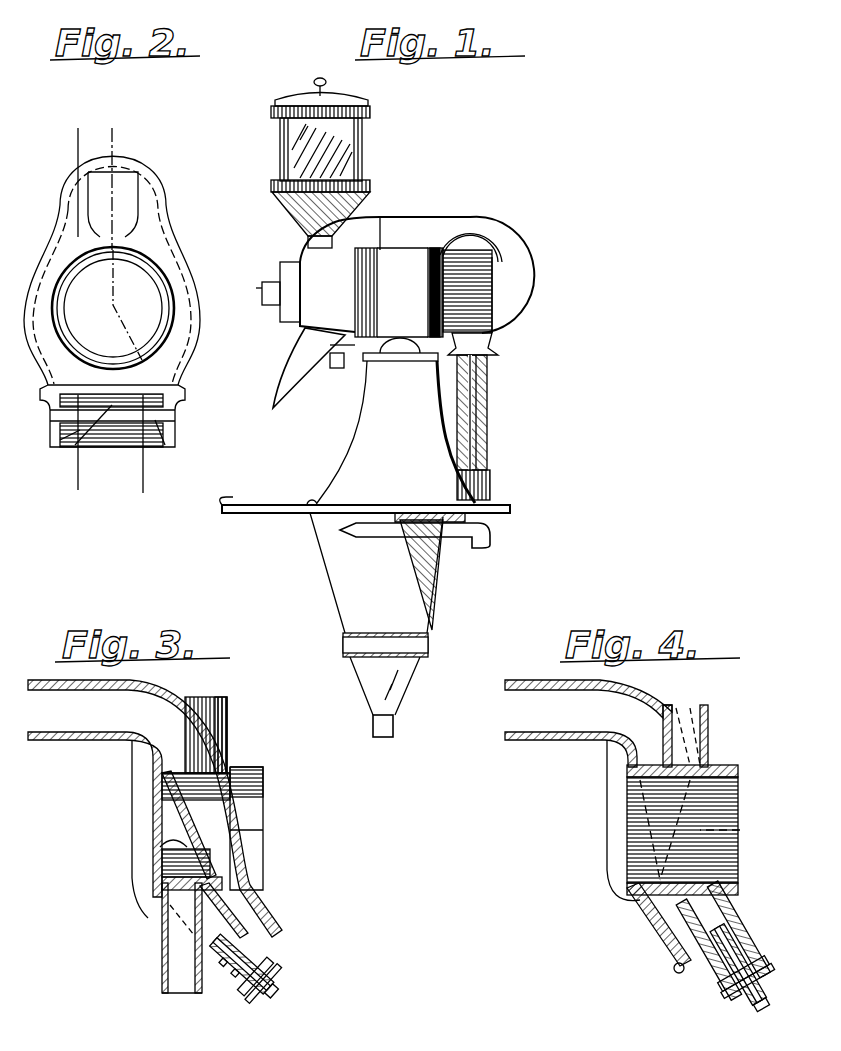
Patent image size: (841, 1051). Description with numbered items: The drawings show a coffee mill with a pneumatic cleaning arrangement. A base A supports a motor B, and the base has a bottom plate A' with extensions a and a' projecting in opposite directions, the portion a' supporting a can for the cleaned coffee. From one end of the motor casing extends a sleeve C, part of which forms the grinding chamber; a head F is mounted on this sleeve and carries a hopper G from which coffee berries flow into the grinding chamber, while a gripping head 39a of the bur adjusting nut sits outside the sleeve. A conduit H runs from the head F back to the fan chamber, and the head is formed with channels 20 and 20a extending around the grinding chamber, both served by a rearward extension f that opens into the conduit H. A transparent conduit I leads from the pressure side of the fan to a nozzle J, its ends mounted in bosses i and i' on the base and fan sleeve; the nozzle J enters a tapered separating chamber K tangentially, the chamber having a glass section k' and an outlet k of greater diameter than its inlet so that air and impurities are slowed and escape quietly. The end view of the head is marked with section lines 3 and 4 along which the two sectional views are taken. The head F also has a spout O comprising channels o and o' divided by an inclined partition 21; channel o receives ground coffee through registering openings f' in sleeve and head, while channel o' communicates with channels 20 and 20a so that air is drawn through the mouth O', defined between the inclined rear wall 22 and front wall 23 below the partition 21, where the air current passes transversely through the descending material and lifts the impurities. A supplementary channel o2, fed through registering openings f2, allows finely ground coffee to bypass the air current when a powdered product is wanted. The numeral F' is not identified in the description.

In FIG. 1, the hopper G is at (358, 152).
In FIG. 2, the head F is at (120, 270).
In FIG. 1, the head F is at (403, 275).
In FIG. 4, the head F is at (690, 741).
In FIG. 1, the rearward extension f is at (379, 223).
In FIG. 3, the rearward extension f is at (155, 808).
In FIG. 4, the rearward extension f is at (588, 790).
In FIG. 1, the conduit H is at (427, 243).
In FIG. 1, the motor B is at (415, 262).
In FIG. 1, the gripping portion or head of adjusting nut 39a is at (263, 296).
In FIG. 2, the spout O is at (122, 416).
In FIG. 1, the spout O is at (295, 368).
In FIG. 3, the spout O is at (261, 947).
In FIG. 4, the spout O is at (728, 970).
In FIG. 1, the sleeve or casing member C is at (352, 348).
In FIG. 1, the boss i' is at (481, 344).
In FIG. 1, the base A is at (396, 420).
In FIG. 1, the conduit I is at (478, 403).
In FIG. 1, the boss i is at (483, 484).
In FIG. 1, the bottom plate A' is at (418, 503).
In FIG. 1, the extension of bottom plate a is at (376, 509).
In FIG. 1, the extension of bottom plate a' is at (269, 524).
In FIG. 1, the nozzle J is at (415, 546).
In FIG. 1, the separating chamber K is at (425, 598).
In FIG. 1, the transparent section k' is at (373, 696).
In FIG. 1, the outlet k is at (398, 726).
In FIG. 2, the section line 3— 3 is at (105, 305).
In FIG. 2, the section line 4— 4 is at (127, 306).
In FIG. 2, the channel o is at (57, 457).
In FIG. 3, the channel o is at (234, 990).
In FIG. 2, the channel o' is at (84, 446).
In FIG. 2, the partition 21 is at (158, 420).
In FIG. 3, the partition 21 is at (265, 950).
In FIG. 4, the partition 21 is at (735, 962).
In FIG. 3, the nozzle block F' is at (228, 793).
In FIG. 3, the channel 20a is at (263, 832).
In FIG. 3, the registering openings f2 is at (162, 907).
In FIG. 3, the supplementary channel o2 is at (162, 960).
In FIG. 3, the front wall 23 is at (273, 930).
In FIG. 4, the front wall 23 is at (740, 923).
In FIG. 3, the mouth O' is at (272, 984).
In FIG. 4, the mouth O' is at (748, 984).
In FIG. 3, the rear wall 22 is at (237, 980).
In FIG. 4, the rear wall 22 is at (723, 997).
In FIG. 4, the channel 20 is at (738, 830).
In FIG. 4, the registering openings f' is at (644, 928).